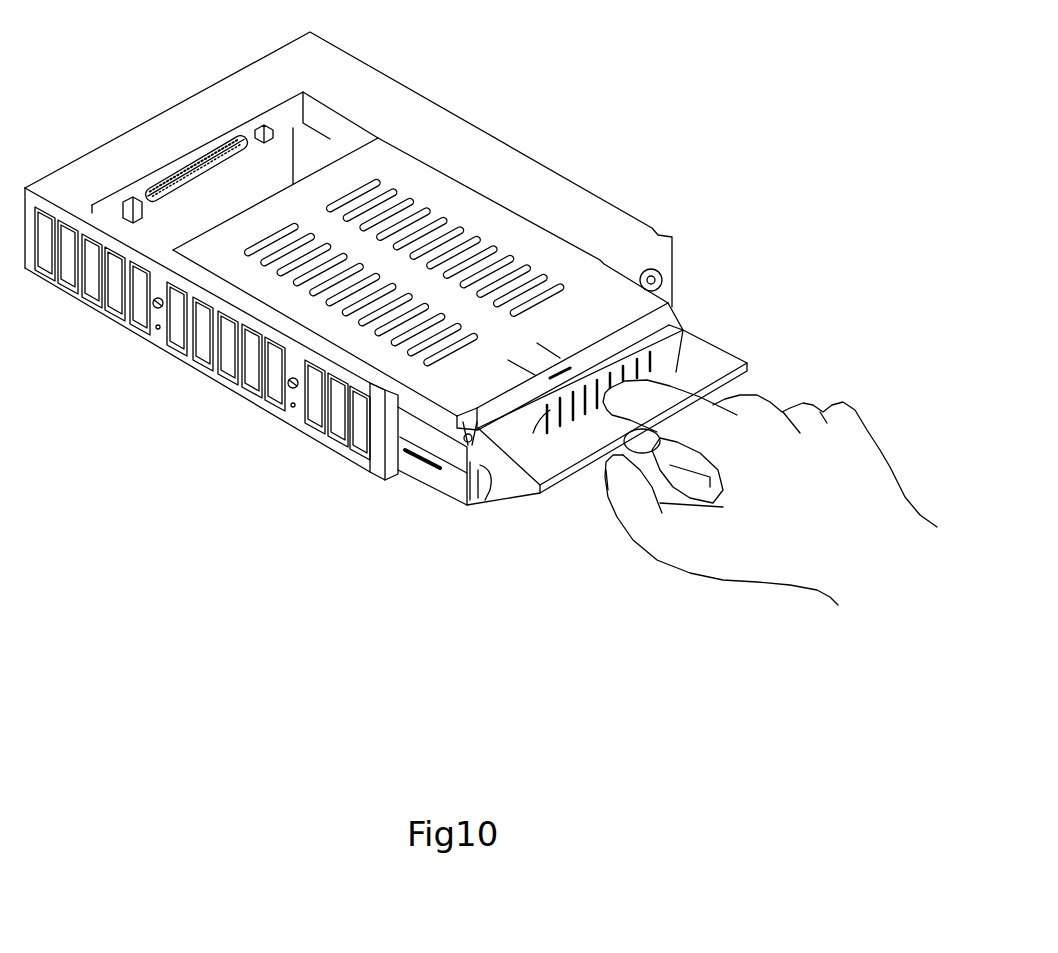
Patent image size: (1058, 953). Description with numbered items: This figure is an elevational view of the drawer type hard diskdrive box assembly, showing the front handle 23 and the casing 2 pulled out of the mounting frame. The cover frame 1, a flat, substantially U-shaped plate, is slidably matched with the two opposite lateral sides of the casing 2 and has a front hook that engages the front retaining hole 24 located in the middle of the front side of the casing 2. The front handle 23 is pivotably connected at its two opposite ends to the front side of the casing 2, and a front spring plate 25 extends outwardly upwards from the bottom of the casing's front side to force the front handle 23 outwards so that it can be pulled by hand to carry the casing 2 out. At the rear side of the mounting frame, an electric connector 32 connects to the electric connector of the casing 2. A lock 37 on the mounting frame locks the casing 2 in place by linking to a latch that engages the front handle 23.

The cover frame 1 is at (397, 165).
The casing 2 is at (425, 485).
The front handle 23 is at (730, 347).
The front retaining hole 24 is at (573, 372).
The front spring plate 25 is at (470, 503).
The electric connector 32 is at (168, 204).
The lock 37 is at (663, 283).